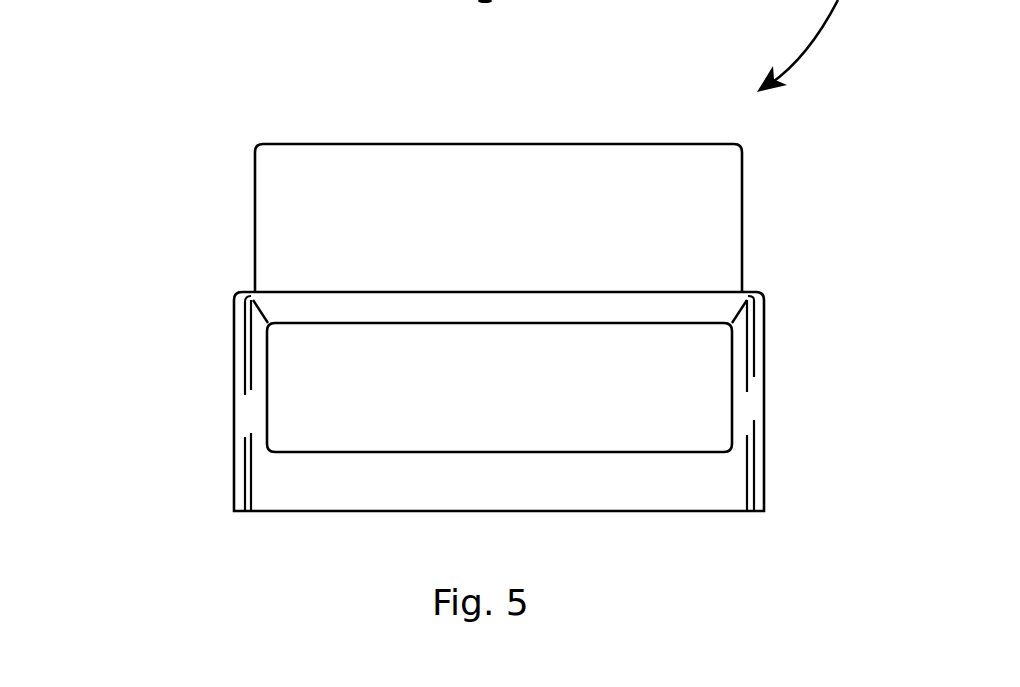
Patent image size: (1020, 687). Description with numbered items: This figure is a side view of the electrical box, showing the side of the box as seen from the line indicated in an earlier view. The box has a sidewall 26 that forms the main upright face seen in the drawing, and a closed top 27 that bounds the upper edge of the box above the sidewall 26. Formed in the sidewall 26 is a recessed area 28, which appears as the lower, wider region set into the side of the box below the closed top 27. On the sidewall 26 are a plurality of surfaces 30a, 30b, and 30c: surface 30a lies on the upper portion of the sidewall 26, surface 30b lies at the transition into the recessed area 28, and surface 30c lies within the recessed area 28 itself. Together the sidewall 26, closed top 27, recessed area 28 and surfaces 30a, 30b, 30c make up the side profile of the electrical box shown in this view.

The sidewall 26 is at (236, 213).
The closed top 27 is at (283, 144).
The recessed area 28 is at (703, 291).
The surface 30a is at (505, 224).
The surface 30b is at (590, 268).
The surface 30c is at (499, 387).